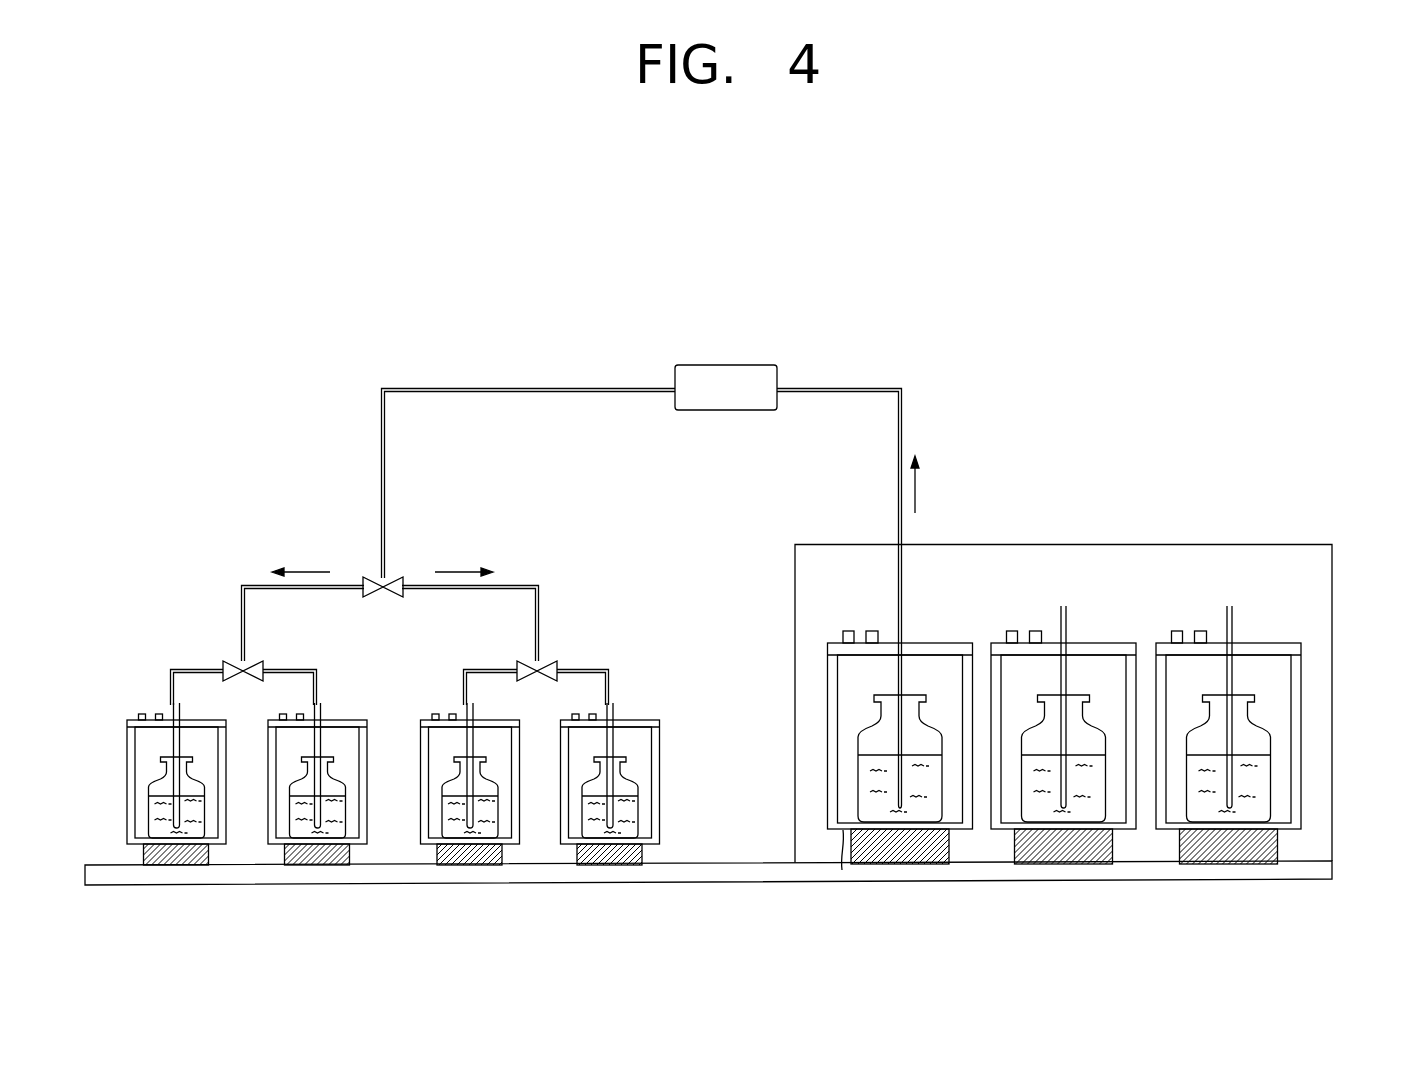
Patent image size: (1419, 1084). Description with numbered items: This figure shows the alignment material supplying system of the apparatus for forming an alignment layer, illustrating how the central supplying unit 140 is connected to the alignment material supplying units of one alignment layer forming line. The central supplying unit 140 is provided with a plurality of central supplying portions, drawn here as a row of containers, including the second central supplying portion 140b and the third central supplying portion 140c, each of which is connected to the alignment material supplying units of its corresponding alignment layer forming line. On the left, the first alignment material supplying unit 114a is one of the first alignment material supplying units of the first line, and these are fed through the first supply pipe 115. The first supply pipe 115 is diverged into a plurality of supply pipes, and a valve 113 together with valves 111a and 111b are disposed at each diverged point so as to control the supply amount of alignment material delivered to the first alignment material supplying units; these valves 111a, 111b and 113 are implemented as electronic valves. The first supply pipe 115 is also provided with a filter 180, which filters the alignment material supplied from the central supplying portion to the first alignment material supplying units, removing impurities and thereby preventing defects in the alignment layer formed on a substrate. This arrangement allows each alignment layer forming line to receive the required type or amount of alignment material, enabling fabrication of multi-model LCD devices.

The filter 180 is at (727, 363).
The valve 113 is at (365, 578).
The first supply pipe 115 is at (524, 584).
The valve 111a is at (228, 667).
The valve 111b is at (519, 666).
The first alignment material supplying unit 114a is at (140, 845).
The central supplying unit 140 is at (1334, 650).
The second central supplying portion 140b is at (1010, 830).
The third central supplying portion 140c is at (1173, 828).